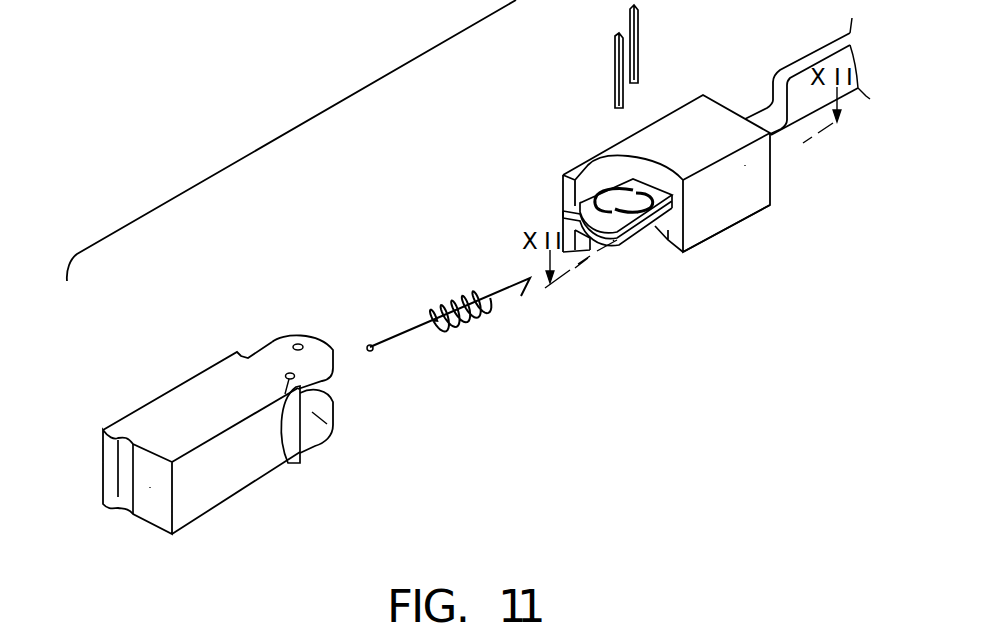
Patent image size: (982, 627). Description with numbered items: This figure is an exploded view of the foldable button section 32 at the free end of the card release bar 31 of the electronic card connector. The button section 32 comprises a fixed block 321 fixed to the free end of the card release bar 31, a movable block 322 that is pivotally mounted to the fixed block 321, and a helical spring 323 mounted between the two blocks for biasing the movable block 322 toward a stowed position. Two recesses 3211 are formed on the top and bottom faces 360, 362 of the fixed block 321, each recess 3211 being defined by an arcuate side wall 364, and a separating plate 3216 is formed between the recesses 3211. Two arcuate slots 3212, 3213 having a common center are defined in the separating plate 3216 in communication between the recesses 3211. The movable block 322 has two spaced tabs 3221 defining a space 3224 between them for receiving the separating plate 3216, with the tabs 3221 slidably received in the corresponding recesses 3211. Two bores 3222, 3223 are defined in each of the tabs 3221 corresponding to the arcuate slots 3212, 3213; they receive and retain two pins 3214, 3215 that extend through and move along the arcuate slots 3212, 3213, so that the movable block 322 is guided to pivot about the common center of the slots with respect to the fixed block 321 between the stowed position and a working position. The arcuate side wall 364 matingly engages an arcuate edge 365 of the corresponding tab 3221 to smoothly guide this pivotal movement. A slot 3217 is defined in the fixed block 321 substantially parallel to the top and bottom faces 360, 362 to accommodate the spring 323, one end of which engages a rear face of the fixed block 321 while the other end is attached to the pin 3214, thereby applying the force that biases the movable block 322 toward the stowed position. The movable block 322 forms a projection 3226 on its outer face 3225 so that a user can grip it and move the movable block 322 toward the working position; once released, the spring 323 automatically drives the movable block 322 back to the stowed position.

The card release bar 31 is at (803, 93).
The foldable button section 32 is at (318, 115).
The fixed block 321 is at (753, 178).
The movable block 322 is at (240, 495).
The helical spring 323 is at (477, 314).
The top face 360 is at (712, 118).
The bottom face 362 is at (747, 220).
The arcuate side wall 364 is at (680, 247).
The arcuate edge 365 is at (323, 342).
The recesses 3211 is at (580, 203).
The arcuate slot 3212 is at (637, 213).
The arcuate slot 3213 is at (600, 182).
The pin 3214 is at (614, 106).
The pin 3215 is at (638, 40).
The separating plate 3216 is at (563, 213).
The slot 3217 is at (614, 243).
The tabs 3221 is at (313, 355).
The bore 3222 is at (298, 464).
The bore 3223 is at (298, 344).
The space 3224 is at (318, 400).
The outer face 3225 is at (150, 487).
The projection 3226 is at (103, 462).